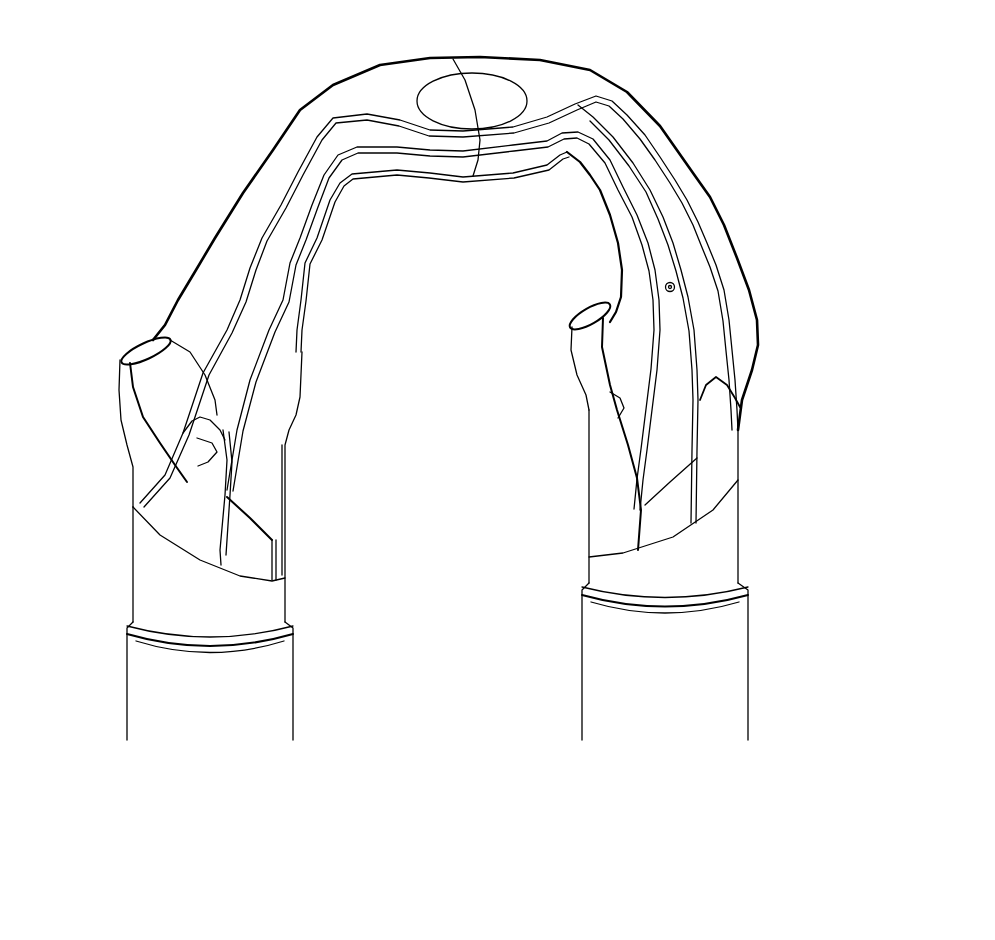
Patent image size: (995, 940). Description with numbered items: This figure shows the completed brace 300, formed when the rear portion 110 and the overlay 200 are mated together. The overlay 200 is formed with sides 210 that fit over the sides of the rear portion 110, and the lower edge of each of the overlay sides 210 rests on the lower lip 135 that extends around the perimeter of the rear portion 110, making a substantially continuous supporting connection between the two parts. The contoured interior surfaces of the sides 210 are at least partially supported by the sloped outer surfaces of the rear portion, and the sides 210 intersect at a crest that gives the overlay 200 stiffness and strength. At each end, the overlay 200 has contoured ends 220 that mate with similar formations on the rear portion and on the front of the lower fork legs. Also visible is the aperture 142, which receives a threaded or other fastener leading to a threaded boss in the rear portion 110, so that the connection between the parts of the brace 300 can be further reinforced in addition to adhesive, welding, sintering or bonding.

The brace 300 is at (431, 474).
The overlay 200 is at (449, 277).
The aperture 142 is at (752, 270).
The rear portion 110 is at (535, 424).
The lower lip 135 is at (341, 393).
The sides 210 is at (381, 487).
The contoured ends 220 is at (749, 436).